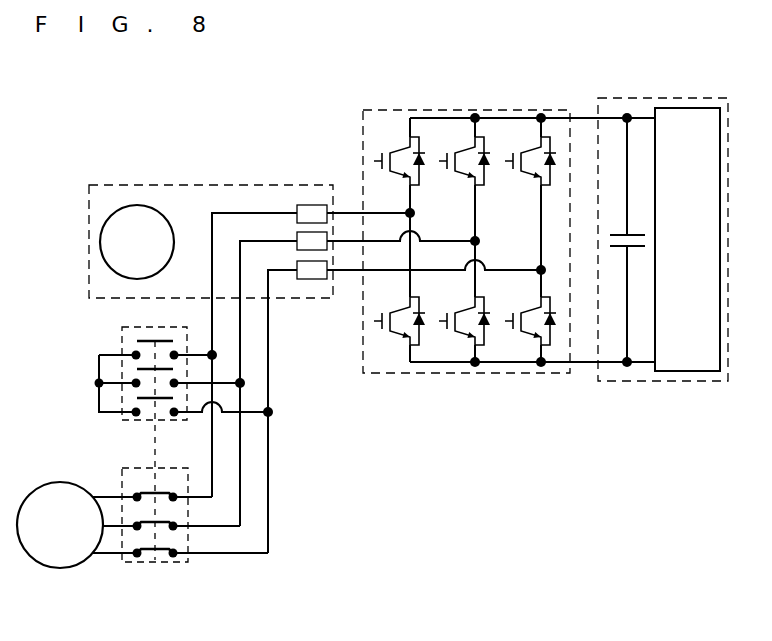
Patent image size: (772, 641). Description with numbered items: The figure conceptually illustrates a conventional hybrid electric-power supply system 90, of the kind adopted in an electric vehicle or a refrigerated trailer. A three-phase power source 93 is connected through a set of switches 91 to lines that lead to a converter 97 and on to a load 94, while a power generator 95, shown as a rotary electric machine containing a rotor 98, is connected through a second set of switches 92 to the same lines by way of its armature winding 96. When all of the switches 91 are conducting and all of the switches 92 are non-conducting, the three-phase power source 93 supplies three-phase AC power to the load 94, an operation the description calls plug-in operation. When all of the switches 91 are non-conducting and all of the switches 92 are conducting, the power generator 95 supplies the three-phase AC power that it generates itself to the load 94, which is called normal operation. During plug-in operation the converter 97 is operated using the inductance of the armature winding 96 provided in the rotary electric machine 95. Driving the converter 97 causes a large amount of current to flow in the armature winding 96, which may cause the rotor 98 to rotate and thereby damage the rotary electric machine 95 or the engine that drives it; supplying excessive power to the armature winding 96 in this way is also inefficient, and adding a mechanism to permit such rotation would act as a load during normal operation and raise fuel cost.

The hybrid electric-power supply system 90 is at (103, 131).
The switches 91 is at (141, 465).
The switches 92 is at (141, 323).
The three-phase power source 93 is at (62, 568).
The load 94 is at (650, 382).
The power generator 95 is at (172, 184).
The armature winding 96 is at (289, 201).
The converter 97 is at (497, 374).
The rotor 98 is at (104, 212).